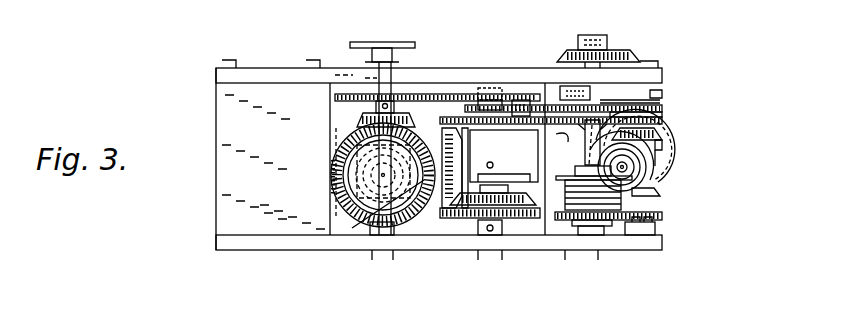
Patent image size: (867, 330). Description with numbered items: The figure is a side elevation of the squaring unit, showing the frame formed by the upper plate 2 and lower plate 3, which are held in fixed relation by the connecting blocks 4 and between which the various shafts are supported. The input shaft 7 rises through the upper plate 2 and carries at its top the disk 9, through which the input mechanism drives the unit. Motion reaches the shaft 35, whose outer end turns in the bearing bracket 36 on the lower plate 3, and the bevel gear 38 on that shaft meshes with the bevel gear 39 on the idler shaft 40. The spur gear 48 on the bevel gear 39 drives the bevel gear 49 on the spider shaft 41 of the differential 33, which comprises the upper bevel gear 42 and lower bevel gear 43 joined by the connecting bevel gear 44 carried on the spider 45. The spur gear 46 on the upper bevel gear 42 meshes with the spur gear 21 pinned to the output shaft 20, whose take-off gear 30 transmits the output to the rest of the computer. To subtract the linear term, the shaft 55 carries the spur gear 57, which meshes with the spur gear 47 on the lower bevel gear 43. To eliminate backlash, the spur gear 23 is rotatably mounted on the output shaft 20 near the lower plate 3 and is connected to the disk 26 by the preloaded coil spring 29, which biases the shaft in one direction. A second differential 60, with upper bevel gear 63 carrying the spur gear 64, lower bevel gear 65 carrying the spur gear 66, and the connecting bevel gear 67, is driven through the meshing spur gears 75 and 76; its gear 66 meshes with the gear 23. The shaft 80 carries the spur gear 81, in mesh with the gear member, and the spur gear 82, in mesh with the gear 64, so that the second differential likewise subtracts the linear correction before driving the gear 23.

The upper plate 2 is at (216, 72).
The lower plate 3 is at (216, 244).
The connecting blocks 4 is at (216, 141).
The input shaft 7 is at (380, 72).
The disk 9 is at (410, 44).
The output shaft 20 is at (662, 163).
The spur gear 21 is at (670, 120).
The spur gear 23 is at (647, 224).
The disk 26 is at (654, 182).
The coil spring 29 is at (653, 194).
The take-off gear 30 is at (622, 56).
The differential 33 is at (374, 228).
The shaft 35 is at (332, 156).
The bearing bracket 36 is at (334, 205).
The bevel gear 38 is at (332, 180).
The bevel gear 39 is at (360, 118).
The idler shaft 40 is at (332, 72).
The spider shaft 41 is at (482, 82).
The upper bevel gear 42 is at (454, 128).
The lower bevel gear 43 is at (446, 220).
The connecting bevel gear 44 is at (448, 128).
The spider 45 is at (494, 162).
The spur gear 46 is at (520, 118).
The spur gear 47 is at (534, 218).
The spur gear 48 is at (334, 96).
The bevel gear 49 is at (500, 98).
The shaft 55 is at (474, 240).
The spur gear 57 is at (416, 234).
The differential 60 is at (660, 158).
The upper bevel gear 63 is at (658, 128).
The spur gear 64 is at (670, 106).
The lower bevel gear 65 is at (660, 213).
The spur gear 66 is at (660, 220).
The connecting bevel gear 67 is at (658, 138).
The spur gear 75 is at (664, 100).
The spur gear 76 is at (652, 96).
The shaft 80 is at (530, 235).
The spur gear 81 is at (585, 138).
The spur gear 82 is at (544, 108).